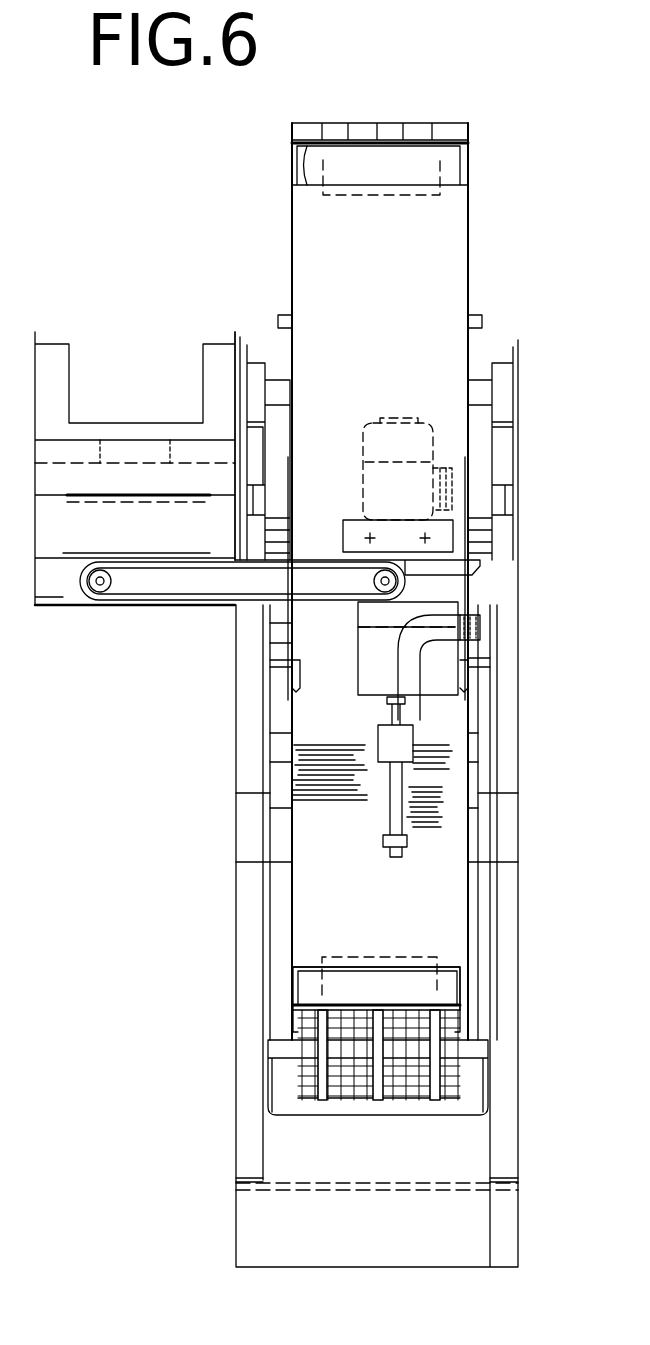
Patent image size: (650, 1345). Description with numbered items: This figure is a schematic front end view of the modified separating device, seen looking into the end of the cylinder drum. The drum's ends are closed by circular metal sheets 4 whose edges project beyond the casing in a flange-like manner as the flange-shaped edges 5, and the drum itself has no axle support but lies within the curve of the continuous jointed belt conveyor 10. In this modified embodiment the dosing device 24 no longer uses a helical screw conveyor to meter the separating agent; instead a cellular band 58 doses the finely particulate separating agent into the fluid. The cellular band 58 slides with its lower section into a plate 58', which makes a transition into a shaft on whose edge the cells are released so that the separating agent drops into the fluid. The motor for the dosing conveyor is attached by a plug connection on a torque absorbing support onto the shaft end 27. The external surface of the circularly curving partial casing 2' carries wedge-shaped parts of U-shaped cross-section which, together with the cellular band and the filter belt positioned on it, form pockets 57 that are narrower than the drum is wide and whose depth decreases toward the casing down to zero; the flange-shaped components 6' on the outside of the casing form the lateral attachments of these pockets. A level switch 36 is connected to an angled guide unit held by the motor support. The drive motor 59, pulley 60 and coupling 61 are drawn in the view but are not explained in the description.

The partial casing 2' is at (429, 965).
The circular metal sheet 4 is at (292, 281).
The flange-shaped edge 5 is at (292, 128).
The flange-shaped component 6' is at (376, 578).
The jointed belt conveyor 10 is at (368, 123).
The dosing device 24 is at (125, 400).
The shaft end 27 is at (405, 150).
The level switch 36 is at (378, 742).
The pocket 57 is at (398, 197).
The cellular band 58 is at (280, 620).
The plate 58' is at (242, 624).
The motor 59 is at (396, 423).
The belt pulley 60 is at (385, 586).
The pipe coupling 61 is at (480, 628).